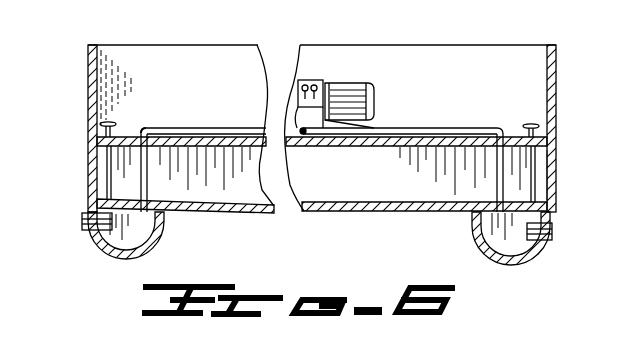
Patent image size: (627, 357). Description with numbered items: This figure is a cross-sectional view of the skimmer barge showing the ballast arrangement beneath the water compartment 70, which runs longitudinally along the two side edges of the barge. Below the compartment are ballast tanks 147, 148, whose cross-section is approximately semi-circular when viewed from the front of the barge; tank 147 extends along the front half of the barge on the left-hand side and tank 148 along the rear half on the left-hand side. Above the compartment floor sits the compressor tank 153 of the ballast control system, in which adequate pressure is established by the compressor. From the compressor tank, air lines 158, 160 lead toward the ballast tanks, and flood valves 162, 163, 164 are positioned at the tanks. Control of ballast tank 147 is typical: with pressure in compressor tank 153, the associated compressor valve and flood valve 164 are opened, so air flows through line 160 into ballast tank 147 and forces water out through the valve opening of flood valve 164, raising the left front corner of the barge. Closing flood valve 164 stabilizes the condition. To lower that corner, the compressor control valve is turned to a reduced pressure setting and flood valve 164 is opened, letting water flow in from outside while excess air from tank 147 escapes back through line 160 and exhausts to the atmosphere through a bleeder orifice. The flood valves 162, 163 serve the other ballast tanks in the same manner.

The water compartment 70 is at (363, 183).
The ballast tank 147 is at (520, 248).
The ballast tank 148 is at (148, 240).
The compressor tank 153 is at (367, 92).
The air line 158 is at (202, 128).
The air line 160 is at (432, 131).
The flood valve 162 is at (101, 163).
The flood valve 163 is at (553, 232).
The flood valve 164 is at (538, 175).